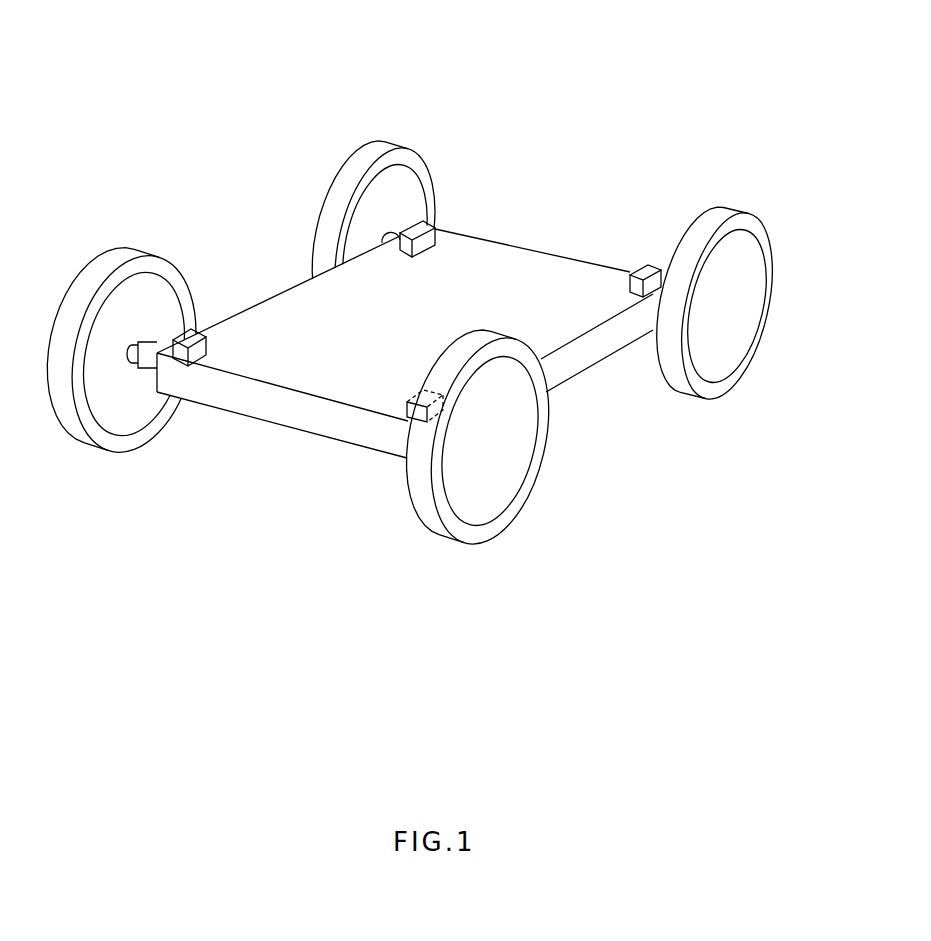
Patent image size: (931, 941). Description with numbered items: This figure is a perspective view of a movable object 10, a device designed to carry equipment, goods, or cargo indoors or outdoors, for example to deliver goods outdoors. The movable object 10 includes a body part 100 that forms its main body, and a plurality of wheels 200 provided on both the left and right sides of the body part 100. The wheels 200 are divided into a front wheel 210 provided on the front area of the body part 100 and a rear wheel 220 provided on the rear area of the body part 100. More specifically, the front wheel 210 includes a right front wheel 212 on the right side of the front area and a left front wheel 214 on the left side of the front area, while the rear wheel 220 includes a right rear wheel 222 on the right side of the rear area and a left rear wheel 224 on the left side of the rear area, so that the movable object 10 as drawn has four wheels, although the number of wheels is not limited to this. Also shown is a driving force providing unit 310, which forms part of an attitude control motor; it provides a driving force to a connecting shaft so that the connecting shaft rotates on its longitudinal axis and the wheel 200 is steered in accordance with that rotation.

The movable object 10 is at (178, 79).
The body part 100 is at (533, 255).
The wheel 200 is at (122, 573).
The front wheel 210 is at (185, 543).
The rear wheel 220 is at (185, 620).
The right front wheel 212 is at (727, 208).
The left front wheel 214 is at (391, 145).
The right rear wheel 222 is at (477, 540).
The left rear wheel 224 is at (111, 446).
The driving force providing unit 310 is at (435, 232).